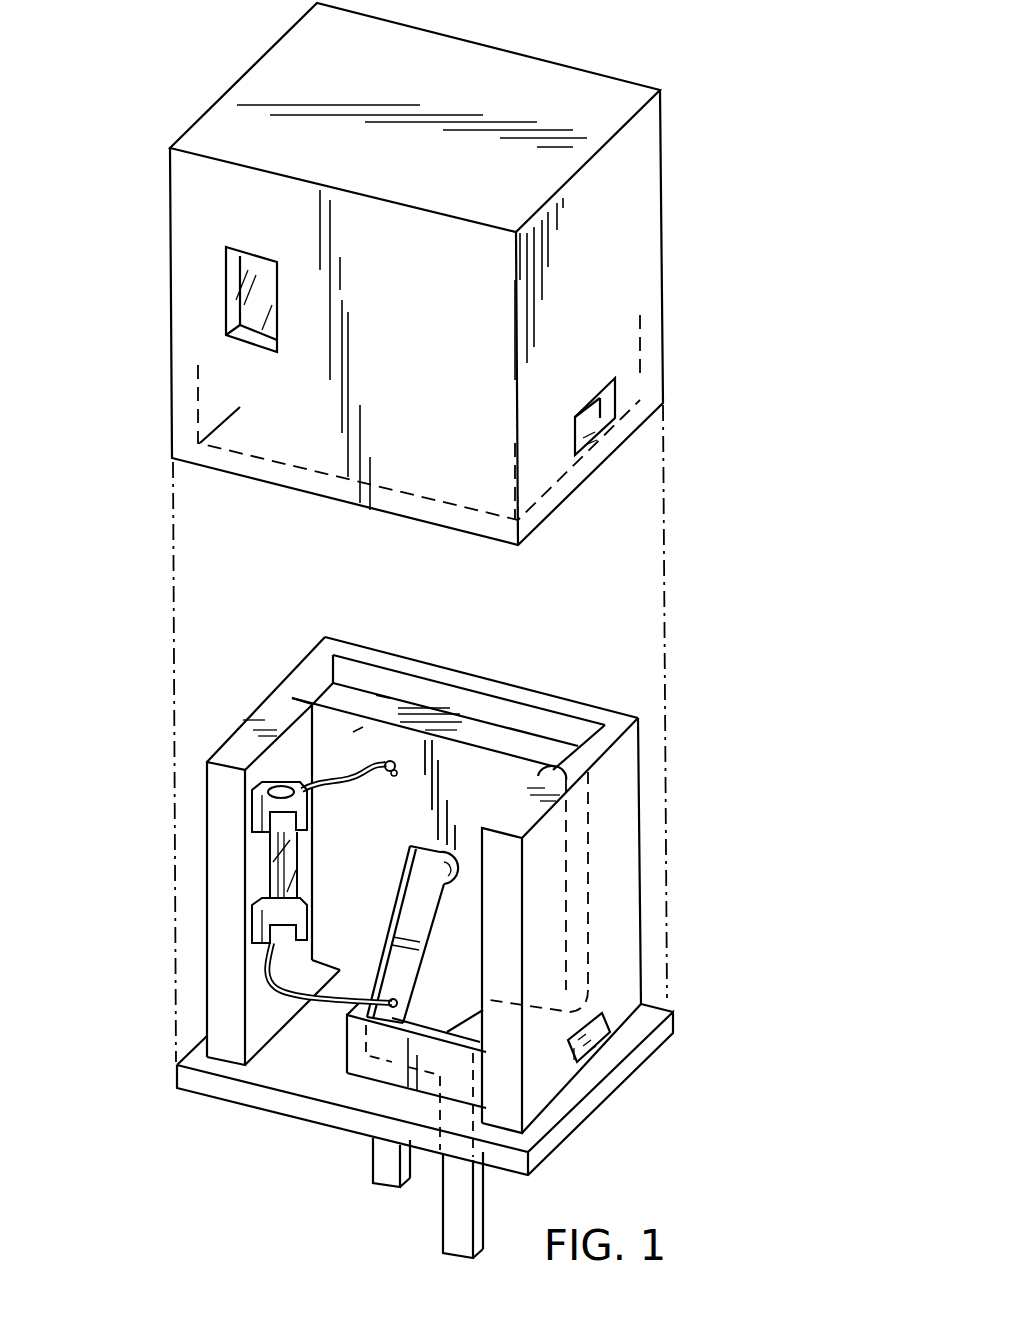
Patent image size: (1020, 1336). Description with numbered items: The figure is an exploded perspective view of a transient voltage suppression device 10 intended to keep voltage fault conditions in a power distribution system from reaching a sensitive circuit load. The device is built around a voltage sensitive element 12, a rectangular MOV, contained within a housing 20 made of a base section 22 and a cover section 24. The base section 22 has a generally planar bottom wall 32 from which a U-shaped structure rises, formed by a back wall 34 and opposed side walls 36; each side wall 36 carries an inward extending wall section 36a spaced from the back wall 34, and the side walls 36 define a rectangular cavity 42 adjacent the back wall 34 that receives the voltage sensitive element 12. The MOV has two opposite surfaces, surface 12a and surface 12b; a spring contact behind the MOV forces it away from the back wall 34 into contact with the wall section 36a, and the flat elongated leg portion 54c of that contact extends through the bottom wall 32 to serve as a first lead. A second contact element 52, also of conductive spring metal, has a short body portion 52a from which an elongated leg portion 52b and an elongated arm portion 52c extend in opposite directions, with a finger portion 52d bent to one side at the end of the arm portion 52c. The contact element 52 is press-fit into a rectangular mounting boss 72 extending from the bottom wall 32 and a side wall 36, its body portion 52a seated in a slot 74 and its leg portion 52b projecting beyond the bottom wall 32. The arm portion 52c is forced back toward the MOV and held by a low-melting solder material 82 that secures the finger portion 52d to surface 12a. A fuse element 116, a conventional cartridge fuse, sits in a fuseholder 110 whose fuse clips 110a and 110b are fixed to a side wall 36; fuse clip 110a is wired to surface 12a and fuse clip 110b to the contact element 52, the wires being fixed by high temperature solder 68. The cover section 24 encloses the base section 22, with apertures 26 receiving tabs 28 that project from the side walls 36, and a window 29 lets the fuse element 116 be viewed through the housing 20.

The transient voltage suppression device 10 is at (755, 75).
The housing 20 is at (680, 352).
The base section 22 is at (642, 840).
The cover section 24 is at (665, 230).
The apertures 26 is at (608, 401).
The tabs 28 is at (590, 1048).
The window 29 is at (248, 302).
The bottom wall portion 32 is at (285, 1077).
The back wall 34 is at (442, 672).
The side walls 36 is at (238, 740).
The inward extending wall section 36a is at (298, 707).
The cavity 42 is at (523, 717).
The voltage sensitive element 12 is at (478, 716).
The surface of MOV 12a is at (353, 732).
The surface of MOV 12b is at (383, 693).
The contact element 52 is at (403, 895).
The body portion 52a is at (393, 1055).
The leg portion 52b is at (457, 1227).
The arm portion 52c is at (420, 935).
The finger portion 52d is at (425, 858).
The leg portion 54c is at (382, 1170).
The high temperature solder 68 is at (378, 780).
The mounting boss 72 is at (353, 1060).
The slot 74 is at (483, 1010).
The solder material 82 is at (457, 872).
The fuseholder 110 is at (245, 803).
The fuse clip 110a is at (270, 817).
The fuse clip 110b is at (262, 925).
The fuse element 116 is at (267, 863).